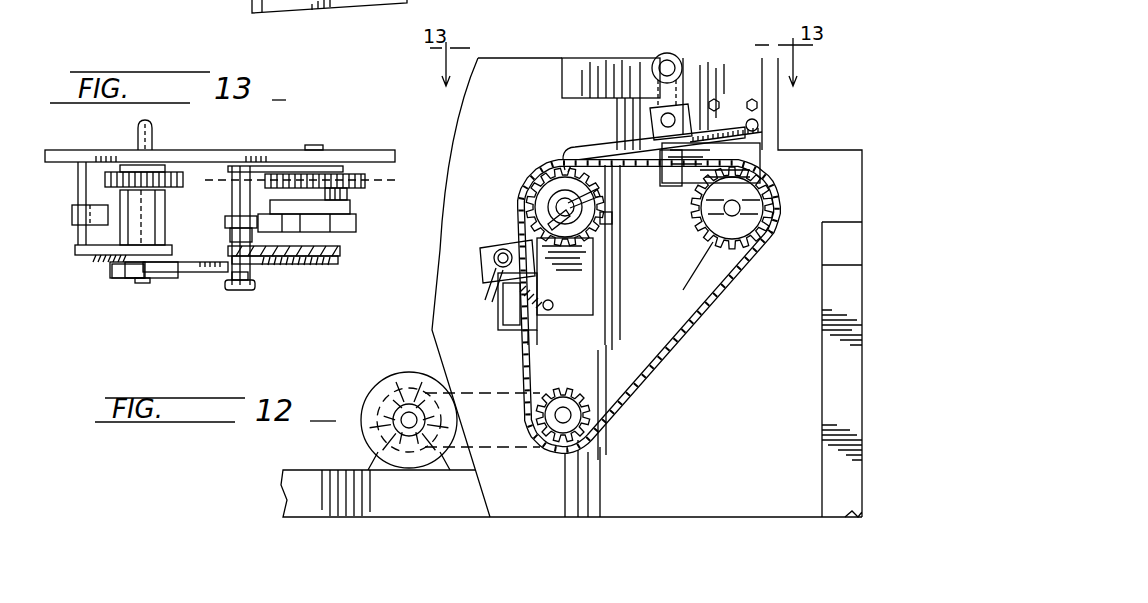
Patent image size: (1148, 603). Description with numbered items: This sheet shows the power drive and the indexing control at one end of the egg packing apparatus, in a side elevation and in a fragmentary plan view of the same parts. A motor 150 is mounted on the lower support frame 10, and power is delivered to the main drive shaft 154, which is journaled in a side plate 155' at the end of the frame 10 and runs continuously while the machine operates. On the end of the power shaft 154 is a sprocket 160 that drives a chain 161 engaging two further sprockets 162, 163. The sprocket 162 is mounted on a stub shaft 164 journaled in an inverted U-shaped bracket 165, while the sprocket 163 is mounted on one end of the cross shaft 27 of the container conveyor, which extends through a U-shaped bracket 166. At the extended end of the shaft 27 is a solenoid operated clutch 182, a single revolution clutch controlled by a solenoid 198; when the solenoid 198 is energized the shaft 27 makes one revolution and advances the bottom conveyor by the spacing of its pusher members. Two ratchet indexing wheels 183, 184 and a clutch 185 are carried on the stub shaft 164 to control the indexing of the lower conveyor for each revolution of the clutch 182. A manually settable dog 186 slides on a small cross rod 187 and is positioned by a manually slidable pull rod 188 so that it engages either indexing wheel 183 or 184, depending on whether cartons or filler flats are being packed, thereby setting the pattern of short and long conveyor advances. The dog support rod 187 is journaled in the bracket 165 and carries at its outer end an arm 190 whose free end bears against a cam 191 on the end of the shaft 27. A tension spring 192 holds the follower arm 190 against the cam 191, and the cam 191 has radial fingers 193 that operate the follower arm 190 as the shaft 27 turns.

In FIG. 12, the lower support frame 10 is at (322, 478).
In FIG. 13, the cross shaft 27 is at (152, 134).
In FIG. 12, the cross shaft 27 is at (562, 190).
In FIG. 12, the motor 150 is at (378, 390).
In FIG. 12, the main drive shaft 154 is at (563, 416).
In FIG. 13, the side plate 155' is at (221, 142).
In FIG. 12, the sprocket 160 is at (577, 397).
In FIG. 13, the chain 161 is at (202, 180).
In FIG. 12, the chain 161 is at (652, 368).
In FIG. 13, the sprocket 162 is at (362, 178).
In FIG. 12, the sprocket 162 is at (686, 275).
In FIG. 13, the sprocket 163 is at (105, 180).
In FIG. 12, the sprocket 163 is at (523, 205).
In FIG. 13, the stub shaft 164 is at (348, 192).
In FIG. 12, the stub shaft 164 is at (740, 206).
In FIG. 13, the inverted U-shaped bracket 165 is at (340, 254).
In FIG. 12, the inverted U-shaped bracket 165 is at (752, 170).
In FIG. 12, the U-shaped bracket 166 is at (585, 273).
In FIG. 13, the solenoid operated clutch 182 is at (158, 212).
In FIG. 13, the ratchet indexing wheel 183 is at (356, 222).
In FIG. 13, the ratchet indexing wheel 184 is at (356, 242).
In FIG. 13, the clutch 185 is at (352, 205).
In FIG. 13, the manually settable dog 186 is at (264, 222).
In FIG. 12, the manually settable dog 186 is at (692, 226).
In FIG. 12, the cross rod 187 is at (660, 106).
In FIG. 13, the pull rod 188 is at (242, 285).
In FIG. 12, the pull rod 188 is at (672, 65).
In FIG. 13, the arm 190 is at (192, 270).
In FIG. 12, the arm 190 is at (583, 148).
In FIG. 13, the cam 191 is at (132, 272).
In FIG. 12, the cam 191 is at (553, 177).
In FIG. 13, the tension spring 192 is at (290, 268).
In FIG. 12, the tension spring 192 is at (722, 125).
In FIG. 13, the radial fingers 193 is at (112, 267).
In FIG. 12, the radial fingers 193 is at (548, 221).
In FIG. 13, the solenoid 198 is at (75, 215).
In FIG. 12, the solenoid 198 is at (502, 308).